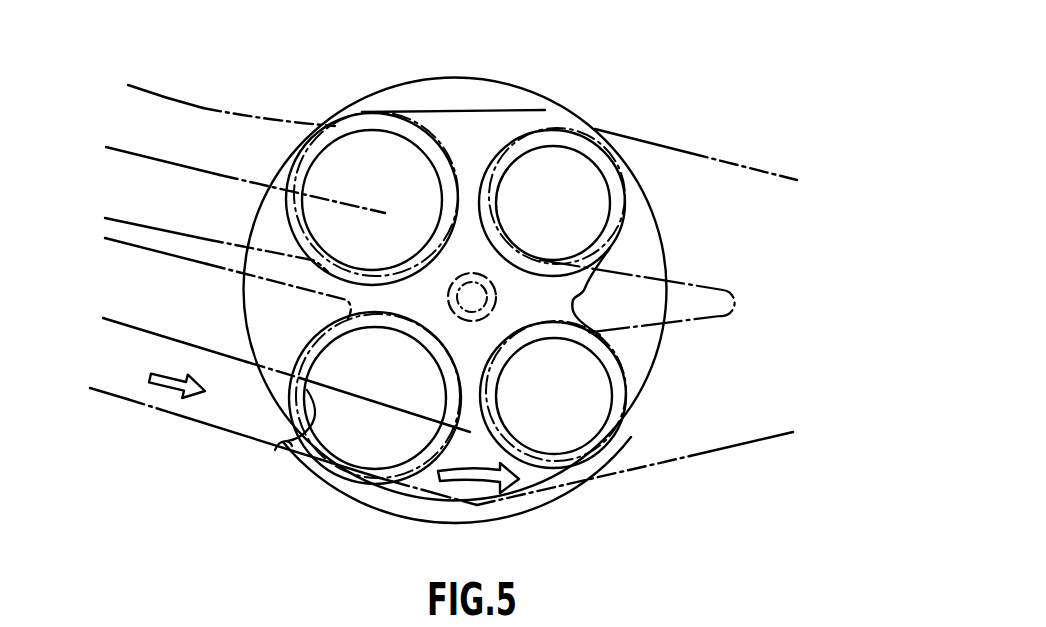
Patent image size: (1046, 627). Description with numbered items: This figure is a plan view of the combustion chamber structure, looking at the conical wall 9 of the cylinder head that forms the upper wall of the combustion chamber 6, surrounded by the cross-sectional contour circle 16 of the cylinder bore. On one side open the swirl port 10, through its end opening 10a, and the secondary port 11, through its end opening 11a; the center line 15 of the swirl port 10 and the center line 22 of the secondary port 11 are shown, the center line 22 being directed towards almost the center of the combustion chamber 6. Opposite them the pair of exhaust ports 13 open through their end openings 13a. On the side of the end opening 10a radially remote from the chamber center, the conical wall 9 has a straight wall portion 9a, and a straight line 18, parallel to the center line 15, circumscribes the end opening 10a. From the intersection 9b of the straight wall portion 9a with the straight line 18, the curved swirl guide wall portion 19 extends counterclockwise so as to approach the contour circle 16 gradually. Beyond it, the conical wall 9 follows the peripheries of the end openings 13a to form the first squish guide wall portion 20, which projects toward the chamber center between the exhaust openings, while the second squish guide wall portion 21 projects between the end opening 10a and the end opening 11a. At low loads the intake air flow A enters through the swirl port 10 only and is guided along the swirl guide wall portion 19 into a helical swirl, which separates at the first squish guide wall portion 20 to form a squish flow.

The combustion chamber 6 is at (473, 214).
The conical wall 9 is at (430, 111).
The straight wall portion 9a is at (417, 499).
The intersection 9b is at (478, 503).
The swirl port 10 is at (170, 416).
The end opening of the swirl port 10a is at (277, 448).
The secondary port 11 is at (251, 114).
The end opening of the secondary port 11a is at (325, 148).
The exhaust ports 13 is at (652, 142).
The end openings of the exhaust ports 13a is at (522, 153).
The center line of the swirl port 15 is at (154, 333).
The cross-sectional contour circle 16 is at (505, 82).
The straight line 18 is at (378, 496).
The swirl guide wall portion 19 is at (534, 501).
The first squish guide wall portion 20 is at (588, 305).
The second squish guide wall portion 21 is at (296, 322).
The center line of the secondary port 22 is at (166, 164).
The intake air flow A is at (491, 500).